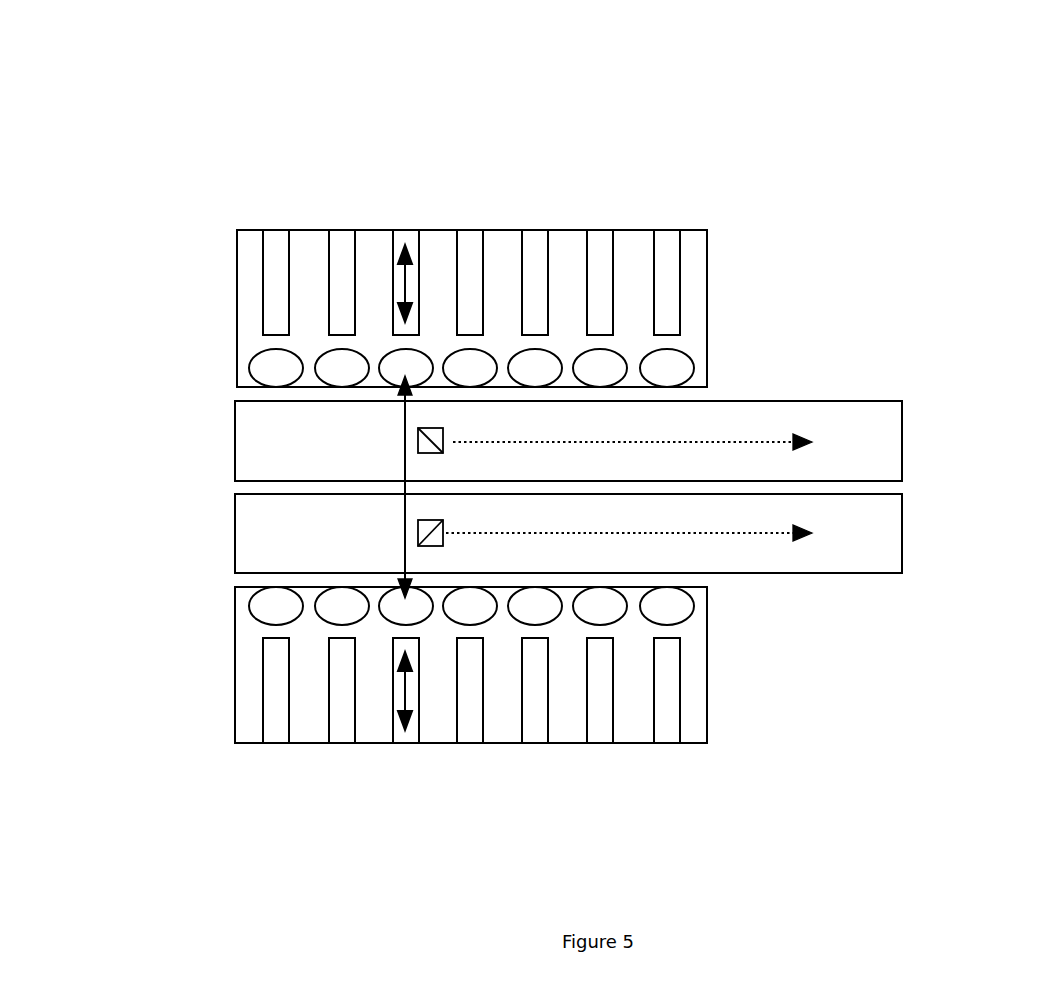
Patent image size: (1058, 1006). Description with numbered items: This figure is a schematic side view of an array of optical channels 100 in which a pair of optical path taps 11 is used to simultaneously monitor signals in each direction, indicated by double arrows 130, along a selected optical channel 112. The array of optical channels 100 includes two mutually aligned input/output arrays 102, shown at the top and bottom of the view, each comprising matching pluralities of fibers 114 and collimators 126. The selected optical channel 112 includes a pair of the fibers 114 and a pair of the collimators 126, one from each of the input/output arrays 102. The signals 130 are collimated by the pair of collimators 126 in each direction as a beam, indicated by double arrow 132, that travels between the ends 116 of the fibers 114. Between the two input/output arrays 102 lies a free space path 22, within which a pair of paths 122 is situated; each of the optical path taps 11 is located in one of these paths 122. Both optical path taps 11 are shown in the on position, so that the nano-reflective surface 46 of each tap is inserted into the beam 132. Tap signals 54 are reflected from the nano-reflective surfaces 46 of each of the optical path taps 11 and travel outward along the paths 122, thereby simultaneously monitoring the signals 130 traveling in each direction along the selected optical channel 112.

The array of optical channels 100 is at (805, 200).
The input/output arrays 102 is at (195, 308).
The selected optical channel 112 is at (408, 160).
The fibers 114 is at (395, 295).
The ends of fibers 116 is at (393, 352).
The collimators 126 is at (393, 388).
The signals 130 is at (400, 296).
The free space path 22 is at (185, 450).
The paths 122 is at (262, 427).
The beam 132 is at (403, 467).
The nano-reflective surface 46 is at (437, 428).
The optical path tap 11 is at (453, 442).
The tap signals 54 is at (708, 440).